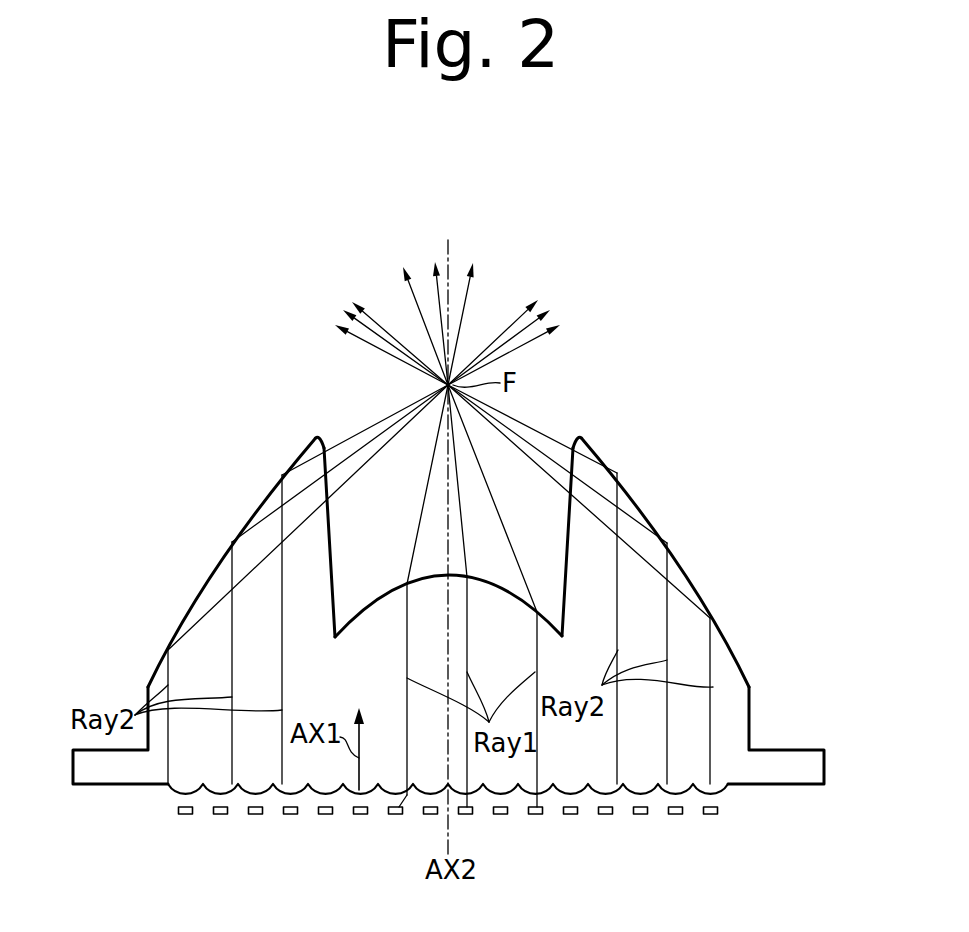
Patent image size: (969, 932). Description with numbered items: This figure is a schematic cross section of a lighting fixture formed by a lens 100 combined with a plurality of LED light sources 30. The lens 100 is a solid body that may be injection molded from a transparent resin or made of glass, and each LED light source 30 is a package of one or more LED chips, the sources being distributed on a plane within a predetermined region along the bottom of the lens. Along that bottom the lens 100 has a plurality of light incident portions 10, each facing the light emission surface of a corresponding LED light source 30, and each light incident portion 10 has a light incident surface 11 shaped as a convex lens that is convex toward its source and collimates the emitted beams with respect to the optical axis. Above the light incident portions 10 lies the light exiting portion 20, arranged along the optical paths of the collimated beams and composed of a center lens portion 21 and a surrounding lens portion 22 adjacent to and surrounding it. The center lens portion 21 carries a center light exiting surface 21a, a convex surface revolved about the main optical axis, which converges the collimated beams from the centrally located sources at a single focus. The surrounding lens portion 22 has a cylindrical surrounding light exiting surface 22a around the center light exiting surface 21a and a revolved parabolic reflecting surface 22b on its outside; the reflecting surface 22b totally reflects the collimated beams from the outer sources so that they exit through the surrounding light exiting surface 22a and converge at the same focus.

The lens 100 is at (379, 226).
The light exiting portion 20 is at (699, 492).
The center lens portion 21 is at (395, 584).
The center light exiting surface 21a is at (363, 613).
The surrounding lens portion 22 is at (625, 465).
The surrounding light exiting surface 22a is at (328, 512).
The reflecting surface 22b is at (268, 496).
The light incident portion 10 is at (177, 795).
The light incident surface 11 is at (182, 792).
The LED light source 30 is at (187, 817).